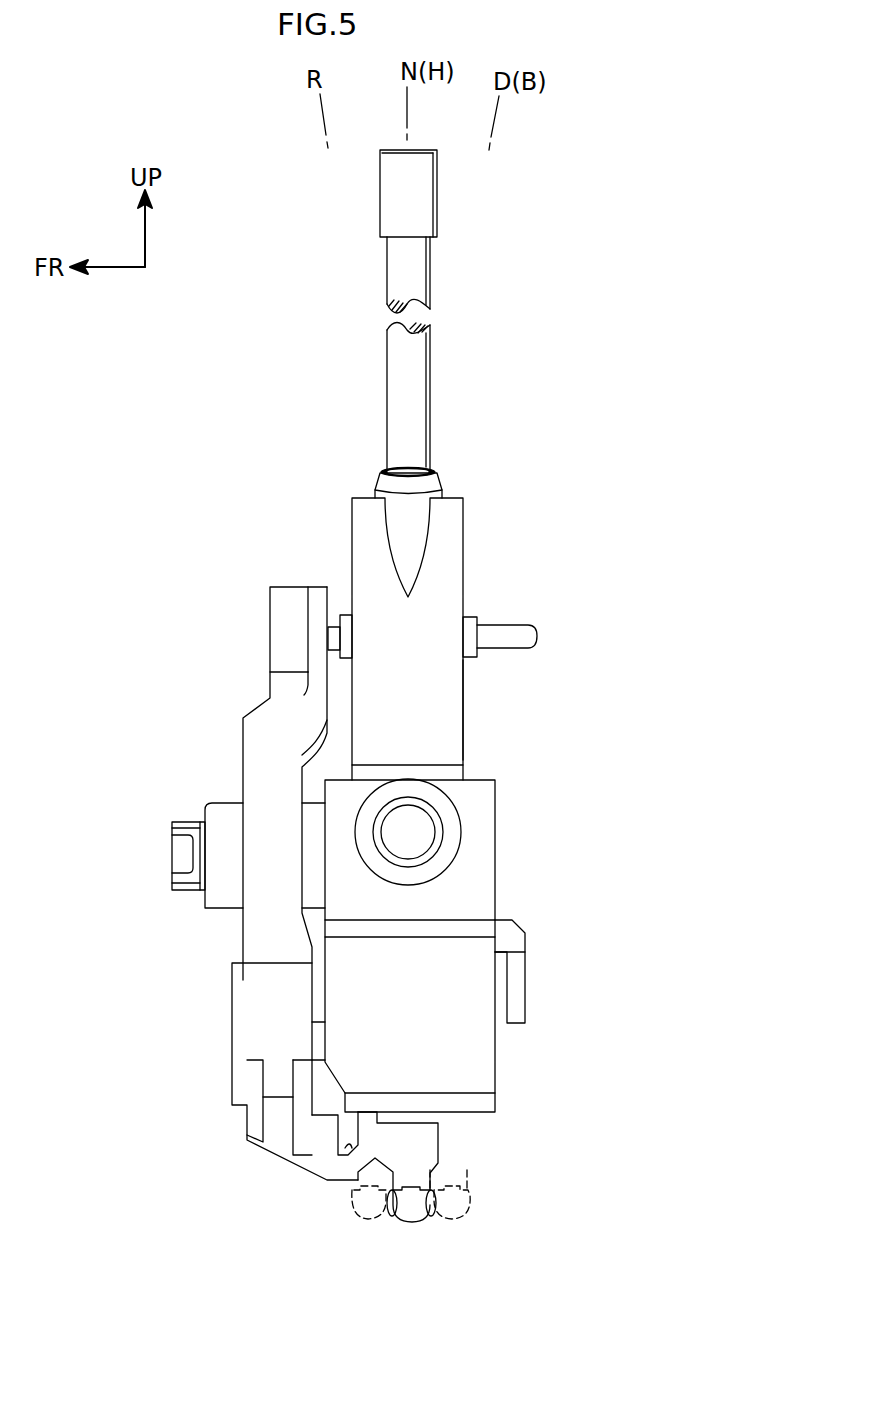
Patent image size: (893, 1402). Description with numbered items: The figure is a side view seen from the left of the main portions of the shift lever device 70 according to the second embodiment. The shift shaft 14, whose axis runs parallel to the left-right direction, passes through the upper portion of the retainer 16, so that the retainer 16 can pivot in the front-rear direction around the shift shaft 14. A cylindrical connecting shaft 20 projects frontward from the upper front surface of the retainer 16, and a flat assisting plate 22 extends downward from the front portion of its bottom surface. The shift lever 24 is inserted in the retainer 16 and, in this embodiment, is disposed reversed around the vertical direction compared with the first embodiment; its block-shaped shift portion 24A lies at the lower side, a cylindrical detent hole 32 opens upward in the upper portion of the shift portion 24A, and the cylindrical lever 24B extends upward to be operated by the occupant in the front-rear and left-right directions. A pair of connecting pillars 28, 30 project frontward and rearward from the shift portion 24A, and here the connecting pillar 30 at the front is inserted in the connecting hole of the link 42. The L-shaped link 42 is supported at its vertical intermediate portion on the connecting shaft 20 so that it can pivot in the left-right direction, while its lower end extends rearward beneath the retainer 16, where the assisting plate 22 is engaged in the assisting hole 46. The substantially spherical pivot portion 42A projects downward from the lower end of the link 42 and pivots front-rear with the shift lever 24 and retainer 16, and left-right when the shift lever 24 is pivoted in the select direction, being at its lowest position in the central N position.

The shift lever device 70 is at (216, 431).
The shift lever 24 is at (460, 498).
The shift portion 24A is at (465, 705).
The lever 24B is at (432, 372).
The detent hole 32 is at (398, 468).
The connecting pillar 30 is at (334, 618).
The connecting pillar 28 is at (506, 626).
The retainer 16 is at (496, 858).
The shift shaft 14 is at (418, 826).
The connecting shaft 20 is at (228, 838).
The link 42 is at (243, 700).
The pivot portion 42A is at (411, 1223).
The assisting hole 46 is at (350, 1145).
The assisting plate 22 is at (343, 1120).